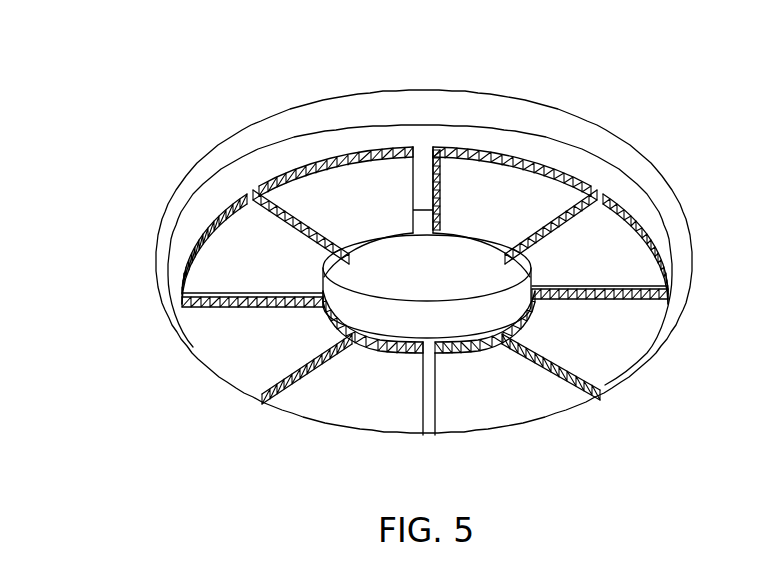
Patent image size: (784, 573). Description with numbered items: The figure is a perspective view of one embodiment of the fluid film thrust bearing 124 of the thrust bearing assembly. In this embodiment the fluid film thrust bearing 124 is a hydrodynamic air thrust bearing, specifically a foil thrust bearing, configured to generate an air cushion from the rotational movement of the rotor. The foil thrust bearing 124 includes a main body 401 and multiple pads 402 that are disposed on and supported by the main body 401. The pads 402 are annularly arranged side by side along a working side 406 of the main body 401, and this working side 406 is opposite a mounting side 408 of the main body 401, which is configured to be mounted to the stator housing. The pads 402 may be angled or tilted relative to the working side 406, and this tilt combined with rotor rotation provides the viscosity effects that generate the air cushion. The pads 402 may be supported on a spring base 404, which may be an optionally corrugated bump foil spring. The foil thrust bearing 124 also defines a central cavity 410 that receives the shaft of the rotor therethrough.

The fluid film thrust bearing 124 is at (380, 248).
The main body 401 is at (232, 156).
The pads 402 is at (383, 189).
The spring base 404 is at (323, 162).
The working side 406 is at (632, 195).
The mounting side 408 is at (424, 224).
The central cavity 410 is at (400, 320).